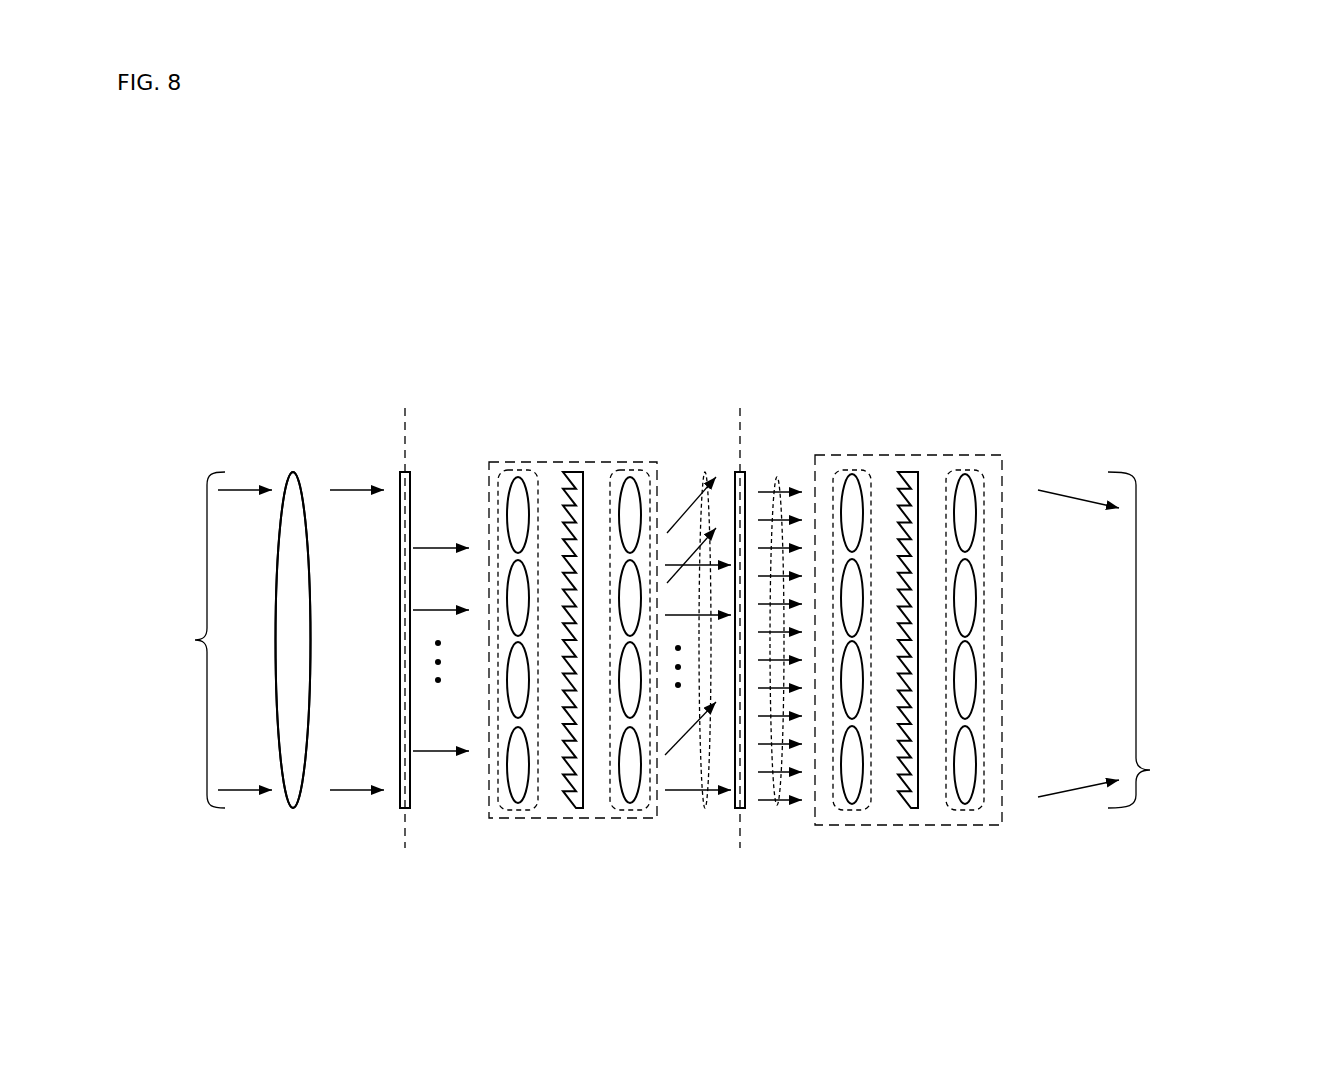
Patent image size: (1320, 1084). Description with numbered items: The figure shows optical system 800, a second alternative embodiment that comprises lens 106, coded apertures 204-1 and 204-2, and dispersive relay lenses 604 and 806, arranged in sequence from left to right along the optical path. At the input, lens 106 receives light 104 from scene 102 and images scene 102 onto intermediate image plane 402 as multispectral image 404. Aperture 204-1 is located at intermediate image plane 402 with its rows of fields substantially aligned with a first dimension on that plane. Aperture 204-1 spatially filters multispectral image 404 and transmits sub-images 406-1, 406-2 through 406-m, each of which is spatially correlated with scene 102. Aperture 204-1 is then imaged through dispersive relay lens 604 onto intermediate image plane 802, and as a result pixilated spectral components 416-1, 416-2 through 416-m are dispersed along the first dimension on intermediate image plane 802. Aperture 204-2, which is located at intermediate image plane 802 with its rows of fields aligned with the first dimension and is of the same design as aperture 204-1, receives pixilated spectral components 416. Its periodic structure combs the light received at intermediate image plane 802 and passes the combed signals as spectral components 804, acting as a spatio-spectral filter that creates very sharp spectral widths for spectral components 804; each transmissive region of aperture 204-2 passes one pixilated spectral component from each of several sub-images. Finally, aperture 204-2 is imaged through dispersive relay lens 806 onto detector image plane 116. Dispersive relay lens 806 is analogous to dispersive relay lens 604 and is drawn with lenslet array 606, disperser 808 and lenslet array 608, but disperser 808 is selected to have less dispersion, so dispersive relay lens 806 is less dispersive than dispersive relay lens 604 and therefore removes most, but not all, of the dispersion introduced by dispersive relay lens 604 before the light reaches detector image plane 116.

The optical system 800 is at (238, 246).
The scene 102 is at (199, 640).
The light 104 is at (232, 566).
The lens 106 is at (293, 808).
The coded aperture 204-1 is at (398, 489).
The intermediate image plane 402 is at (408, 431).
The multispectral image 404 is at (378, 650).
The sub-image 406-1 is at (447, 532).
The sub-image 406-2 is at (447, 595).
The sub-image 406-m is at (447, 735).
The dispersive relay lens 604 is at (573, 818).
The pixilated spectral component 416-1 is at (670, 548).
The pixilated spectral component 416-2 is at (688, 548).
The pixilated spectral component 416-m is at (670, 770).
The pixilated spectral components 416 is at (702, 810).
The intermediate image plane 802 is at (740, 415).
The coded aperture 204-2 is at (748, 480).
The spectral components 804 is at (775, 812).
The dispersive relay lens 806 is at (905, 629).
The lenslet array 606 is at (853, 471).
The disperser 808 is at (905, 470).
The lenslet array 608 is at (965, 470).
The detector image plane 116 is at (1168, 668).